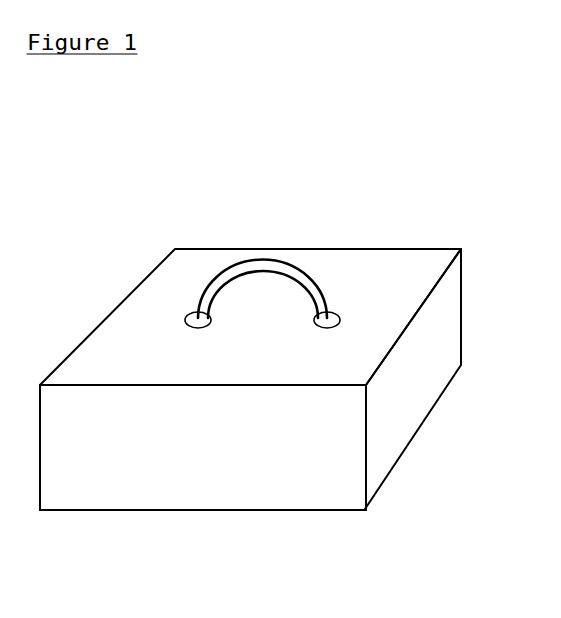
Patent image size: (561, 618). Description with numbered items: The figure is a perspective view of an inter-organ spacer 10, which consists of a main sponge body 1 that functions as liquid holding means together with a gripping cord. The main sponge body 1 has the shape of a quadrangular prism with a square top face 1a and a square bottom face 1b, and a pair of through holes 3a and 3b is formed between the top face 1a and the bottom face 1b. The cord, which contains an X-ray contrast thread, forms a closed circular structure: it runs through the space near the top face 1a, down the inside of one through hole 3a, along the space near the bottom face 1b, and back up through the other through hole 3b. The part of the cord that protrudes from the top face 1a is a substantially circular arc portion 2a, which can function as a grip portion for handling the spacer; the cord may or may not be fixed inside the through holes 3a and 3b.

The inter-organ spacer 10 is at (428, 184).
The main sponge body 1 is at (455, 309).
The top face 1a is at (407, 262).
The bottom face 1b is at (349, 525).
The substantially circular arc portion 2a is at (267, 262).
The through hole 3a is at (194, 317).
The through hole 3b is at (333, 315).